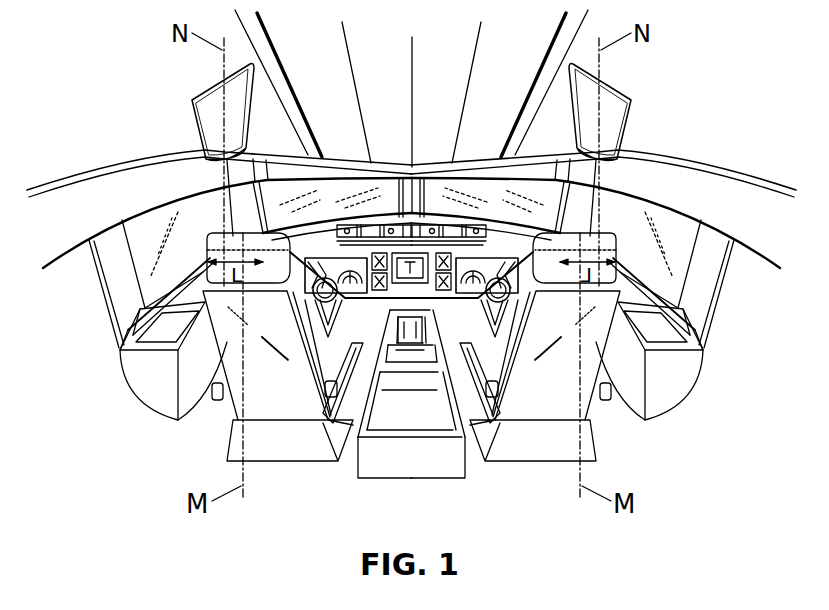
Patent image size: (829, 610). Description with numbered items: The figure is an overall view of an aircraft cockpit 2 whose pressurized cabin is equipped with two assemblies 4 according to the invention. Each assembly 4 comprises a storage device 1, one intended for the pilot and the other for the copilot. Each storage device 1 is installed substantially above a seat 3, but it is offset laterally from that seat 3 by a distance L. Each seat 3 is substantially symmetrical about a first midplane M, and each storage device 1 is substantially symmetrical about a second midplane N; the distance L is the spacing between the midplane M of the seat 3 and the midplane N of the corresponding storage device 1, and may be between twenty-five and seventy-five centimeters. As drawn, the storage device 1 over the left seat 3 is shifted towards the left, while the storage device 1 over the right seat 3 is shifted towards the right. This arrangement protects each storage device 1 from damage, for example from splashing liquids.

The storage device 1 is at (212, 100).
The aircraft cockpit 2 is at (302, 497).
The seat 3 is at (228, 338).
The assembly 4 is at (194, 117).